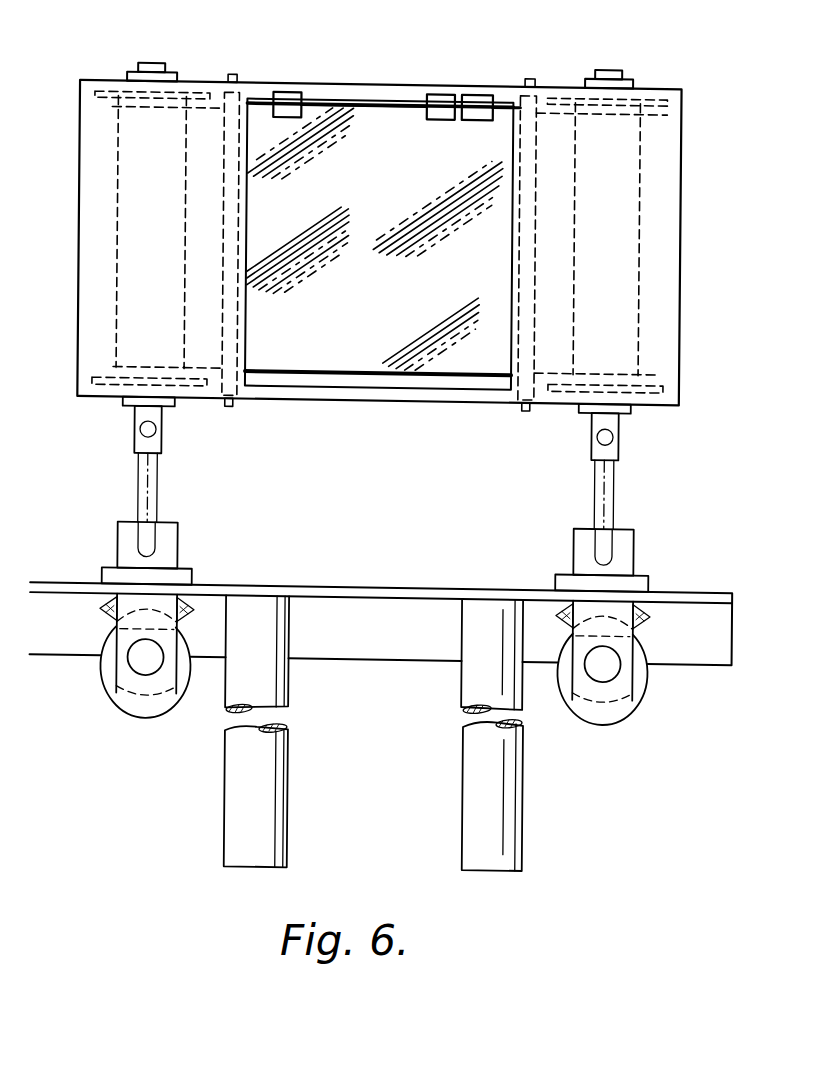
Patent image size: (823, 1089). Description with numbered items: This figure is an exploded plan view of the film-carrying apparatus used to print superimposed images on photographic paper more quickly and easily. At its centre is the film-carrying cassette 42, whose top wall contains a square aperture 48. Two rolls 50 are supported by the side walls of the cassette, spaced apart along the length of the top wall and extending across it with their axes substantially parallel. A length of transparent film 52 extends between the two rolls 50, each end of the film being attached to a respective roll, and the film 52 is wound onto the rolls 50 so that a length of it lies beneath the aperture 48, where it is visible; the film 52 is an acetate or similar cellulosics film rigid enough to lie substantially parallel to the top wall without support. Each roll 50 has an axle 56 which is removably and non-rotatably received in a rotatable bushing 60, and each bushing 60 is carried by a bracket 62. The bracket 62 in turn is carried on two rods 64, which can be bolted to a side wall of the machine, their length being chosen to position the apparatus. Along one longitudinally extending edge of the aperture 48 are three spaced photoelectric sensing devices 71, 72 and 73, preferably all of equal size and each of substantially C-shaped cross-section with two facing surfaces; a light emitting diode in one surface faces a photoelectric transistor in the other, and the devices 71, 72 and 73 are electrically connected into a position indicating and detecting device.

The film-carrying cassette 42 is at (74, 358).
The square aperture 48 is at (246, 357).
The rolls 50 is at (636, 134).
The transparent film 52 is at (495, 357).
The axle 56 is at (163, 424).
The rotatable bushing 60 is at (168, 555).
The bracket 62 is at (393, 588).
The rods 64 is at (249, 793).
The photoelectric sensing device 71 is at (286, 94).
The photoelectric sensing device 72 is at (447, 100).
The photoelectric sensing device 73 is at (480, 100).